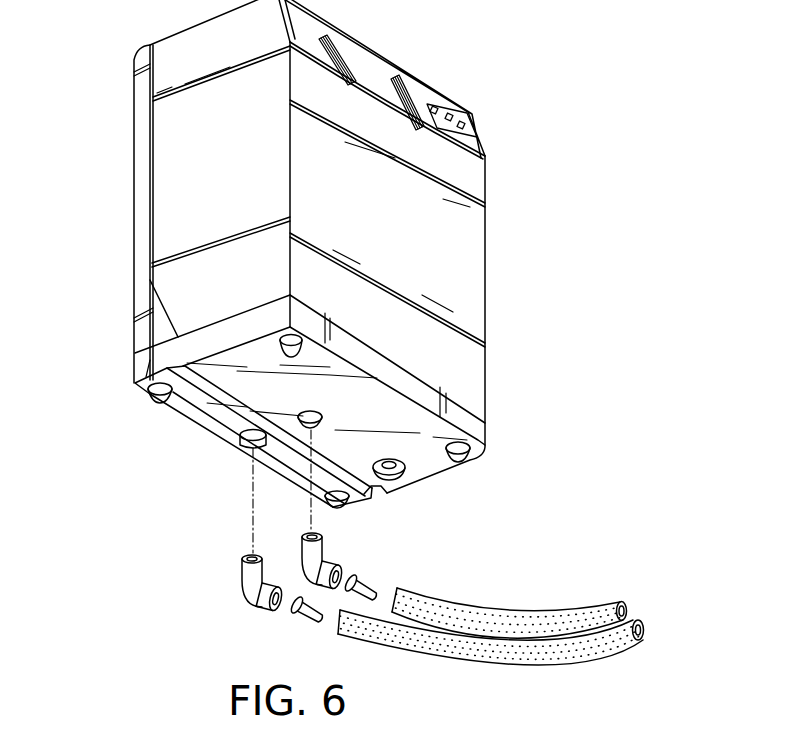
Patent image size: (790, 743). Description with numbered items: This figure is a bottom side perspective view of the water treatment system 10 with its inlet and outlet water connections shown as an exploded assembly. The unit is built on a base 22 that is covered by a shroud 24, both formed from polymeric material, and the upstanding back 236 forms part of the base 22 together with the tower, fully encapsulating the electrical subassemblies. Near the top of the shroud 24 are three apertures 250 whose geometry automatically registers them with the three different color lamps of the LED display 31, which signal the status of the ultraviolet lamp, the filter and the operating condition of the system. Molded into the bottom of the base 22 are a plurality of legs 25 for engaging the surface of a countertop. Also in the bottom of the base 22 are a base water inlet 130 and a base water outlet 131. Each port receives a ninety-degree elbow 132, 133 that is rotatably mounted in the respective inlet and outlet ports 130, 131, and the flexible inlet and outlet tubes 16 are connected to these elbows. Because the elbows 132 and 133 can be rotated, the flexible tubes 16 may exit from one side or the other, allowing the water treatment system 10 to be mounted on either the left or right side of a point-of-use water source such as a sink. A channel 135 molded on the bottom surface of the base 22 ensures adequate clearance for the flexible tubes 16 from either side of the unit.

The water treatment system 10 is at (490, 56).
The shroud 24 is at (487, 180).
The back 236 is at (133, 152).
The apertures 250 is at (447, 127).
The LED display 31 is at (450, 114).
The base water inlet 130 is at (309, 412).
The channel 135 is at (220, 388).
The base 22 is at (192, 415).
The legs 25 is at (150, 397).
The base water outlet 131 is at (247, 446).
The elbow 132 is at (320, 558).
The elbow 133 is at (247, 593).
The flexible inlet and outlet tubes 16 is at (645, 570).